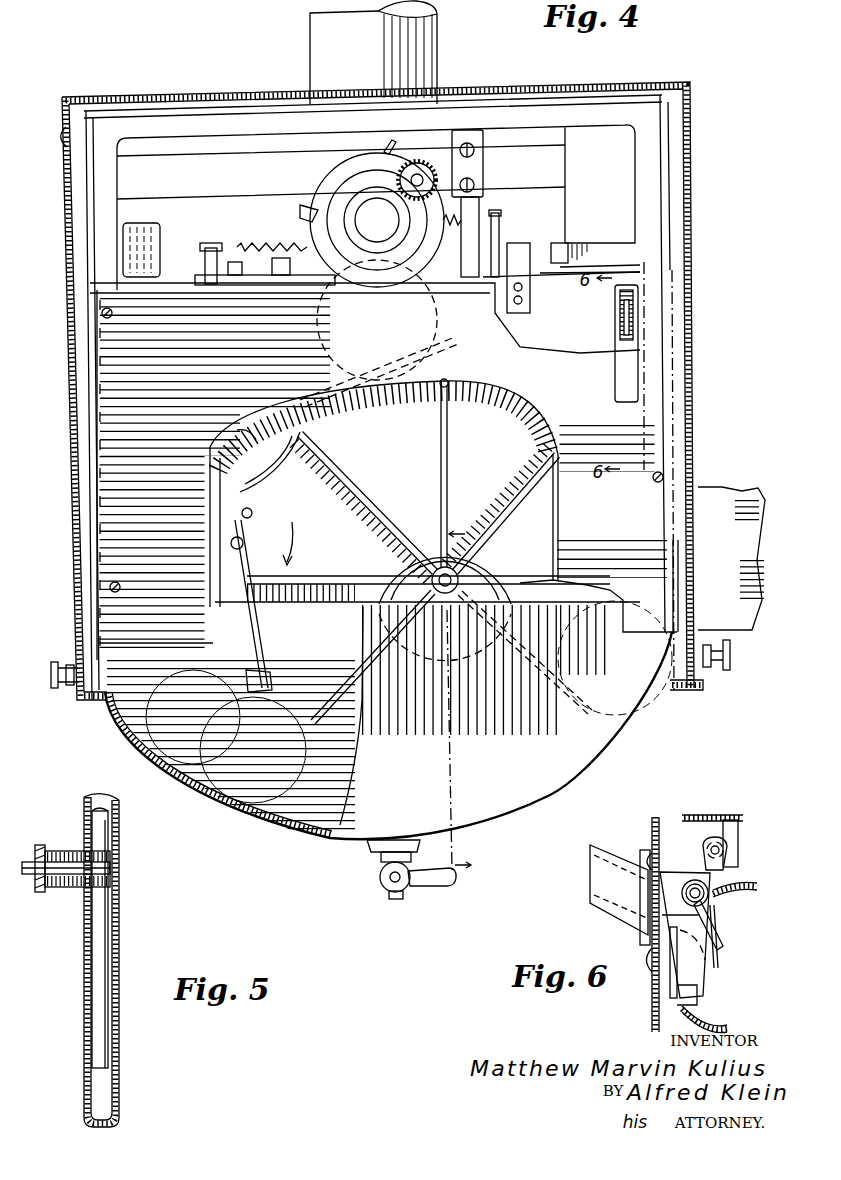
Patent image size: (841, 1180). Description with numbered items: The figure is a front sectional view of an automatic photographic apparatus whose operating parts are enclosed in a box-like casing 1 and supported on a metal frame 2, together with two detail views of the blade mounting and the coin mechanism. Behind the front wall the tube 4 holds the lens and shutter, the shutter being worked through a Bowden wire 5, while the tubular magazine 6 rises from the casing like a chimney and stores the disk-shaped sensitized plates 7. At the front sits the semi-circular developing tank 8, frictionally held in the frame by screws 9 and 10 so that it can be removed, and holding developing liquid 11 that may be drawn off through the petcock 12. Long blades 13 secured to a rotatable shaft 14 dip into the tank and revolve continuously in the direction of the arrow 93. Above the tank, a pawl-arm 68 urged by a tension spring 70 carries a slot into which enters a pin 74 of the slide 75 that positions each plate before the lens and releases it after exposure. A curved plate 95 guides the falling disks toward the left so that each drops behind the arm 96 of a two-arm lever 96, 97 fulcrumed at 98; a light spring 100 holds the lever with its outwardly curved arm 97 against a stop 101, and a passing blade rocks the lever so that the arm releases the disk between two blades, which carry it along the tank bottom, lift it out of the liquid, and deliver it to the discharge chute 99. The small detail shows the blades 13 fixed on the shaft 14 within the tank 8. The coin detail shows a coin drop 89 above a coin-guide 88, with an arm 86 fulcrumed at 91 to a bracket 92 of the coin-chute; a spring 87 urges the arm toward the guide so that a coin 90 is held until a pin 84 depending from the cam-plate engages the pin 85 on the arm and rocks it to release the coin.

In FIG. 4, the casing 1 is at (479, 88).
In FIG. 4, the frame 2 is at (107, 234).
In FIG. 4, the tube 4 is at (342, 170).
In FIG. 4, the Bowden wire 5 is at (300, 207).
In FIG. 4, the magazine 6 is at (312, 38).
In FIG. 4, the sensitized plates 7 is at (438, 312).
In FIG. 4, the developing tank 8 is at (552, 788).
In FIG. 5, the developing tank 8 is at (118, 981).
In FIG. 4, the screw 9 is at (56, 690).
In FIG. 4, the screw 10 is at (731, 658).
In FIG. 4, the developing liquid 11 is at (300, 844).
In FIG. 4, the petcock 12 is at (390, 886).
In FIG. 4, the blades 13 is at (352, 477).
In FIG. 5, the blades 13 is at (101, 838).
In FIG. 4, the shaft 14 is at (432, 578).
In FIG. 5, the shaft 14 is at (40, 864).
In FIG. 4, the pawl-arm 68 is at (203, 262).
In FIG. 4, the tension spring 70 is at (252, 246).
In FIG. 4, the pin 74 is at (232, 287).
In FIG. 4, the slide 75 is at (377, 320).
In FIG. 6, the pin 84 is at (738, 838).
In FIG. 6, the pin 85 is at (707, 841).
In FIG. 6, the arm 86 is at (718, 878).
In FIG. 6, the spring 87 is at (720, 925).
In FIG. 6, the coin-guide 88 is at (677, 975).
In FIG. 4, the coin drop 89 is at (617, 320).
In FIG. 6, the coin drop 89 is at (596, 889).
In FIG. 6, the coin 90 is at (712, 962).
In FIG. 6, the fulcrum 91 is at (690, 883).
In FIG. 6, the bracket 92 is at (619, 885).
In FIG. 4, the arrow 93 is at (298, 580).
In FIG. 4, the curved plate 95 is at (445, 348).
In FIG. 4, the arm 96 is at (256, 632).
In FIG. 4, the arm 97 is at (306, 543).
In FIG. 4, the fulcrum 98 is at (243, 553).
In FIG. 4, the discharge chute 99 is at (724, 500).
In FIG. 4, the light spring 100 is at (268, 461).
In FIG. 4, the stop 101 is at (253, 514).